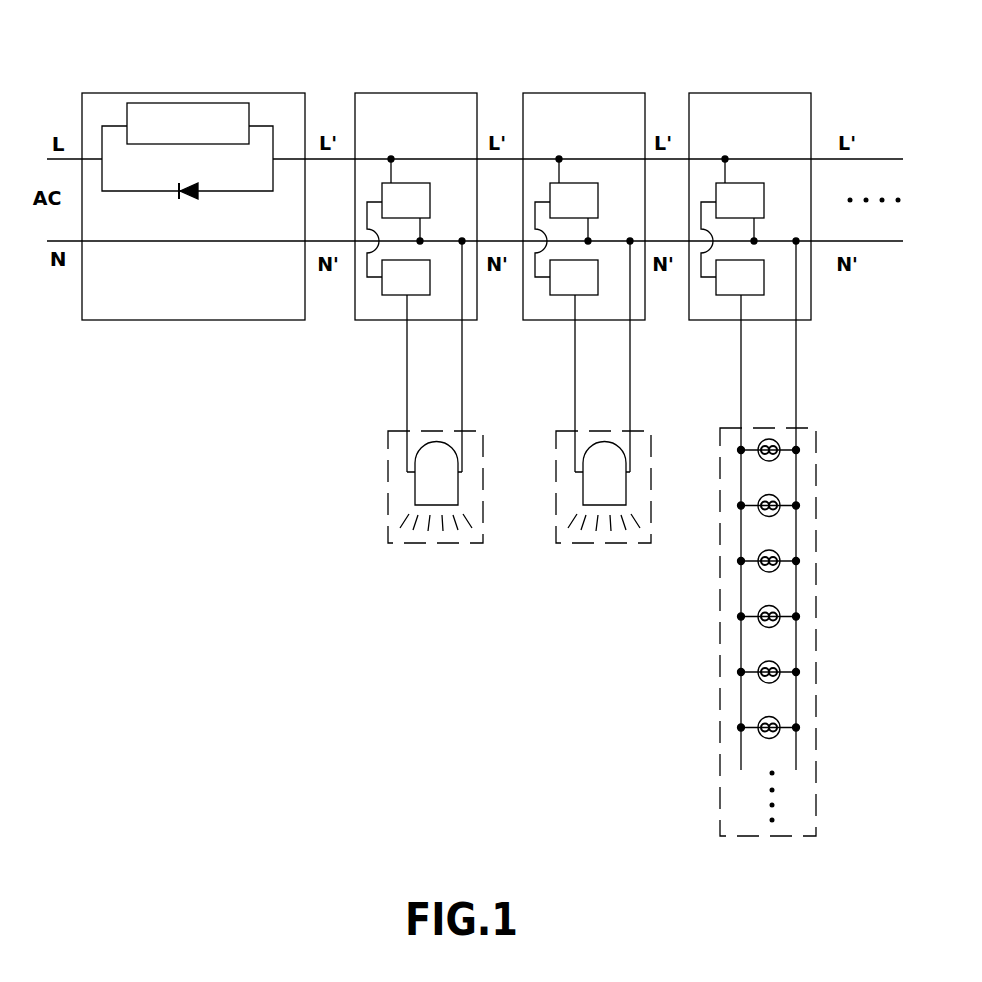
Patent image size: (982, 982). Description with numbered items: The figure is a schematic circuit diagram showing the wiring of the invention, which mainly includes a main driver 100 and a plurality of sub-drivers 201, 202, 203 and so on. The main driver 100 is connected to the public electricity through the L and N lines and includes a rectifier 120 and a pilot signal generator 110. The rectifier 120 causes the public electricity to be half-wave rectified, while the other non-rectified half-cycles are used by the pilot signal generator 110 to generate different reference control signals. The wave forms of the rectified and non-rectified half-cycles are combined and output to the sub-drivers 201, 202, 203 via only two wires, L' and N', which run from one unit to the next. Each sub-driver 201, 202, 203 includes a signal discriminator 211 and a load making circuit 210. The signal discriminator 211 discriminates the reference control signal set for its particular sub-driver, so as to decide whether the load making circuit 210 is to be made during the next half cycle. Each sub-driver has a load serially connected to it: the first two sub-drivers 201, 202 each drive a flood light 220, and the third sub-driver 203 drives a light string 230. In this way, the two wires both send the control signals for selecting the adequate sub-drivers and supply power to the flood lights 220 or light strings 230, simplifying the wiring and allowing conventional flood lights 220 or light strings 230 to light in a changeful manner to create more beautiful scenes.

The main driver 100 is at (193, 195).
The pilot signal generator 110 is at (188, 123).
The rectifier 120 is at (186, 204).
The sub-driver 201 is at (398, 91).
The sub-driver 202 is at (584, 246).
The sub-driver 203 is at (750, 395).
The load making circuit 210 is at (573, 277).
The signal discriminator 211 is at (573, 200).
The flood light 220 is at (425, 549).
The light string 230 is at (717, 641).